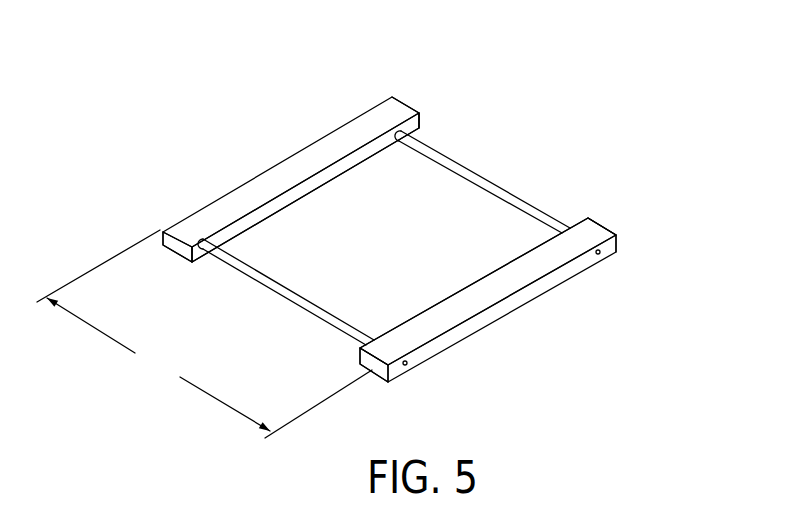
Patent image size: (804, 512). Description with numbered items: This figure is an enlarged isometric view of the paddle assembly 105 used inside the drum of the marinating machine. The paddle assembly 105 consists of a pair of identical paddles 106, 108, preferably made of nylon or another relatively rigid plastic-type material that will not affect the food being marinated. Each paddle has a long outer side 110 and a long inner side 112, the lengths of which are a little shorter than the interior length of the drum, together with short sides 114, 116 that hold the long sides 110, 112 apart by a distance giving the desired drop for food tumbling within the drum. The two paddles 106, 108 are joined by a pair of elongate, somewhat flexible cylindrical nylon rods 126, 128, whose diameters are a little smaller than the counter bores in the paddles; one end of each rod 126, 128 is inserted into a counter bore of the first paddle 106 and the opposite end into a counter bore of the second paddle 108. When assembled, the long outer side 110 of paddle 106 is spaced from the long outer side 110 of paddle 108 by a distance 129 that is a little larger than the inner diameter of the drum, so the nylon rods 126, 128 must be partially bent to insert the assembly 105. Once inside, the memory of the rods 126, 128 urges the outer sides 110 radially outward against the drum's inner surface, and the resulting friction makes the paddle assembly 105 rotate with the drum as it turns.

The paddle assembly 105 is at (411, 214).
The first paddle 106 is at (350, 122).
The second paddle 108 is at (530, 298).
The long outer side 110 is at (395, 212).
The long inner side 112 is at (350, 168).
The short side 114 is at (397, 100).
The short side 116 is at (600, 224).
The nylon rod 126 is at (275, 292).
The nylon rod 128 is at (480, 176).
The distance 129 is at (204, 334).